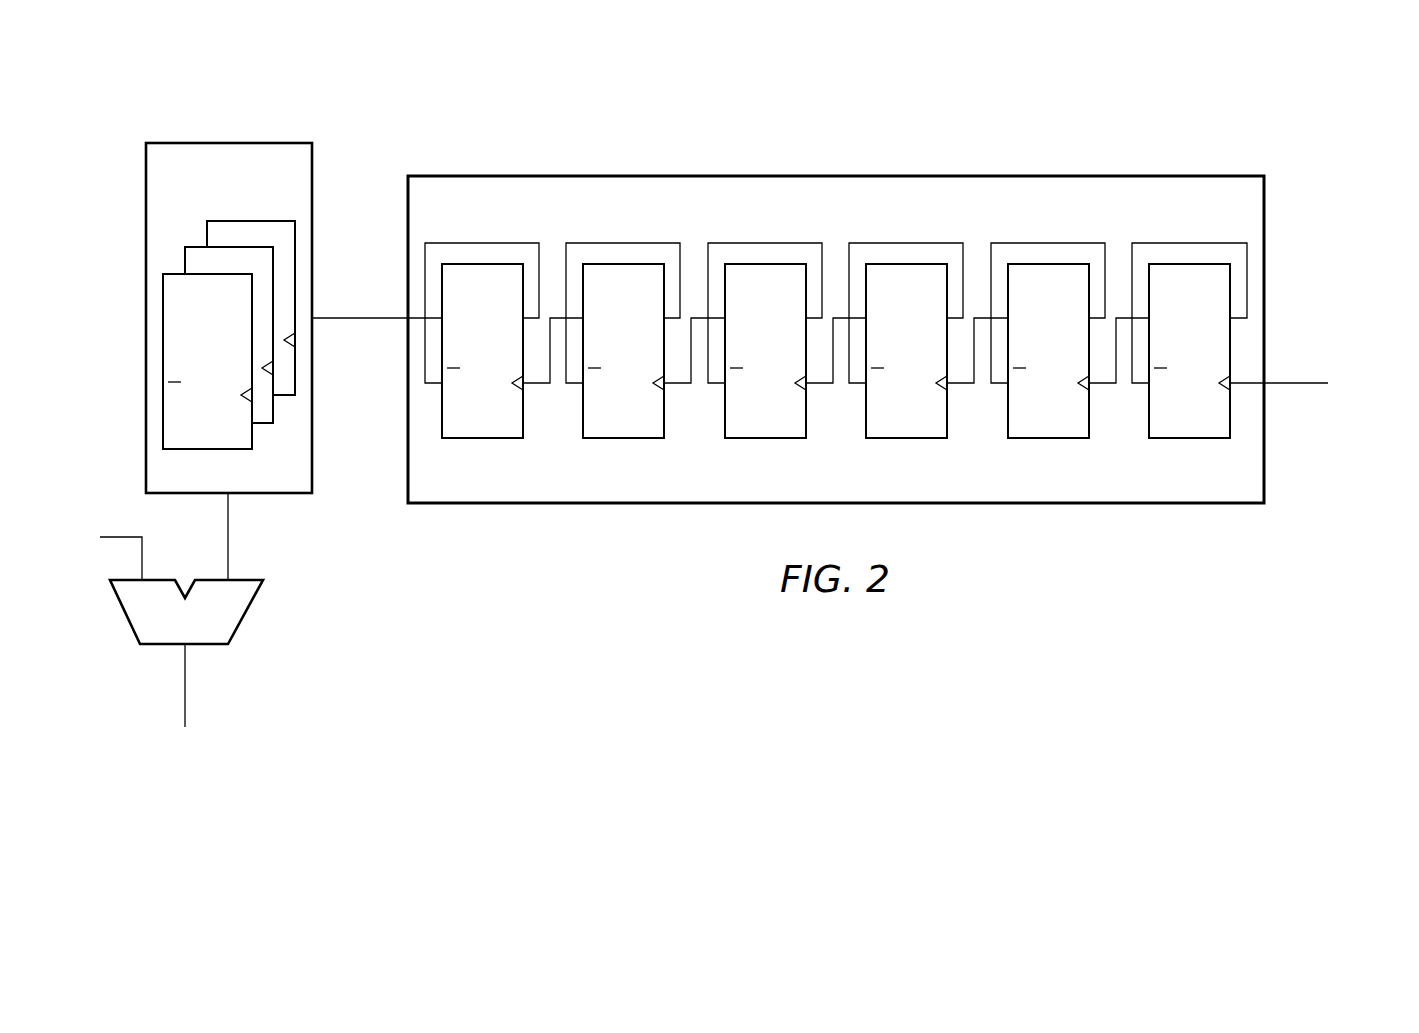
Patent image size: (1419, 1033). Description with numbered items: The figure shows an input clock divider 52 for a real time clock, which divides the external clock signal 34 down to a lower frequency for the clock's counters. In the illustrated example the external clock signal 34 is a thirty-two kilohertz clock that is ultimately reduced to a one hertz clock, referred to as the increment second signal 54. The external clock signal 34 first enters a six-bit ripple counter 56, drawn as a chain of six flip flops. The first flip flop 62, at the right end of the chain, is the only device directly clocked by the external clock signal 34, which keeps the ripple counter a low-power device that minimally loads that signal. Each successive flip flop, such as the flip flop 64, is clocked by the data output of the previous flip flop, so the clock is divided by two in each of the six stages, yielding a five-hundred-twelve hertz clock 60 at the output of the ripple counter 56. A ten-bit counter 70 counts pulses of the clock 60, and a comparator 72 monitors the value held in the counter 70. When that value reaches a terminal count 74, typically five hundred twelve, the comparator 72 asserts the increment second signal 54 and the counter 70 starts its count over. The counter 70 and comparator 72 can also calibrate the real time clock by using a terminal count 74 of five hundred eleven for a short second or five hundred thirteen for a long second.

The input clock divider 52 is at (1157, 122).
The 10-bit counter 70 is at (219, 136).
The 512 Hz clock 60 is at (364, 322).
The 6-bit ripple counter 56 is at (840, 168).
The successive flip flop 64 is at (1055, 438).
The first flip flop 62 is at (1197, 438).
The external clock signal 34 is at (1290, 385).
The comparator 72 is at (123, 615).
The terminal count 74 is at (122, 537).
The increment second signal 54 is at (184, 678).